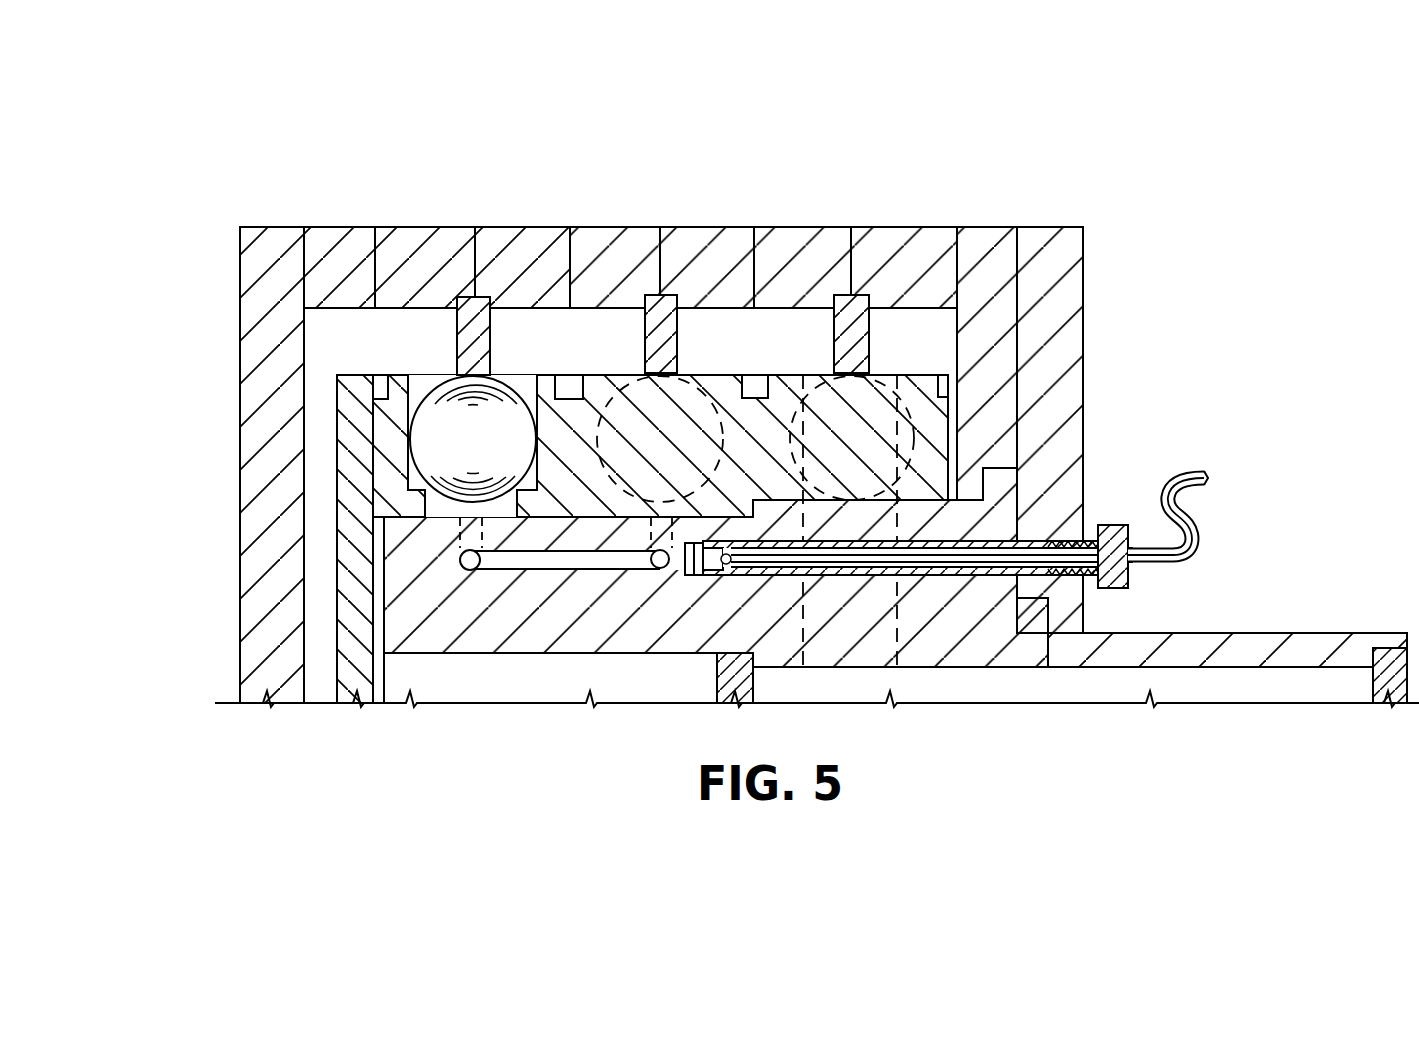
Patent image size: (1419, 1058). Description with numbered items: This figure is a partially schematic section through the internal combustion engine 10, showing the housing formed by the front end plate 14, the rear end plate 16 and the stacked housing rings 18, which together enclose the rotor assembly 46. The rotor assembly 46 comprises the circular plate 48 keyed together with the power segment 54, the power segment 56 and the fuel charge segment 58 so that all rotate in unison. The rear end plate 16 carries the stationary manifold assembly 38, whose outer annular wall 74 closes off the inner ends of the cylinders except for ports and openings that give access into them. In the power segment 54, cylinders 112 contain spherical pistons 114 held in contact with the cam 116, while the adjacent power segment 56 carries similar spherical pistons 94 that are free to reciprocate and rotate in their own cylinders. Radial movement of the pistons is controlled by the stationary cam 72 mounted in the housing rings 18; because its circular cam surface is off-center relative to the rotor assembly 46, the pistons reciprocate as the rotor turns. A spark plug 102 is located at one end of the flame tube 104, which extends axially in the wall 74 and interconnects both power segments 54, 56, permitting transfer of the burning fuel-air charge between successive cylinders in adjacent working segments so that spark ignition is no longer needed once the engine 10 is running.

The internal combustion engine 10 is at (122, 390).
The front end plate 14 is at (240, 580).
The rear end plate 16 is at (1088, 421).
The housing rings 18 is at (701, 226).
The manifold assembly 38 is at (1292, 617).
The rotor assembly 46 is at (322, 483).
The circular plate 48 is at (337, 557).
The power segment 54 is at (397, 377).
The power segment 56 is at (628, 383).
The fuel charge segment 58 is at (893, 378).
The stationary cam 72 is at (833, 350).
The outer annular wall 74 is at (430, 655).
The spherical pistons 94 is at (700, 377).
The spark plug 102 is at (663, 576).
The flame tube 104 is at (540, 571).
The cylinders 112 is at (407, 390).
The spherical pistons 114 is at (525, 392).
The cam 116 is at (494, 328).